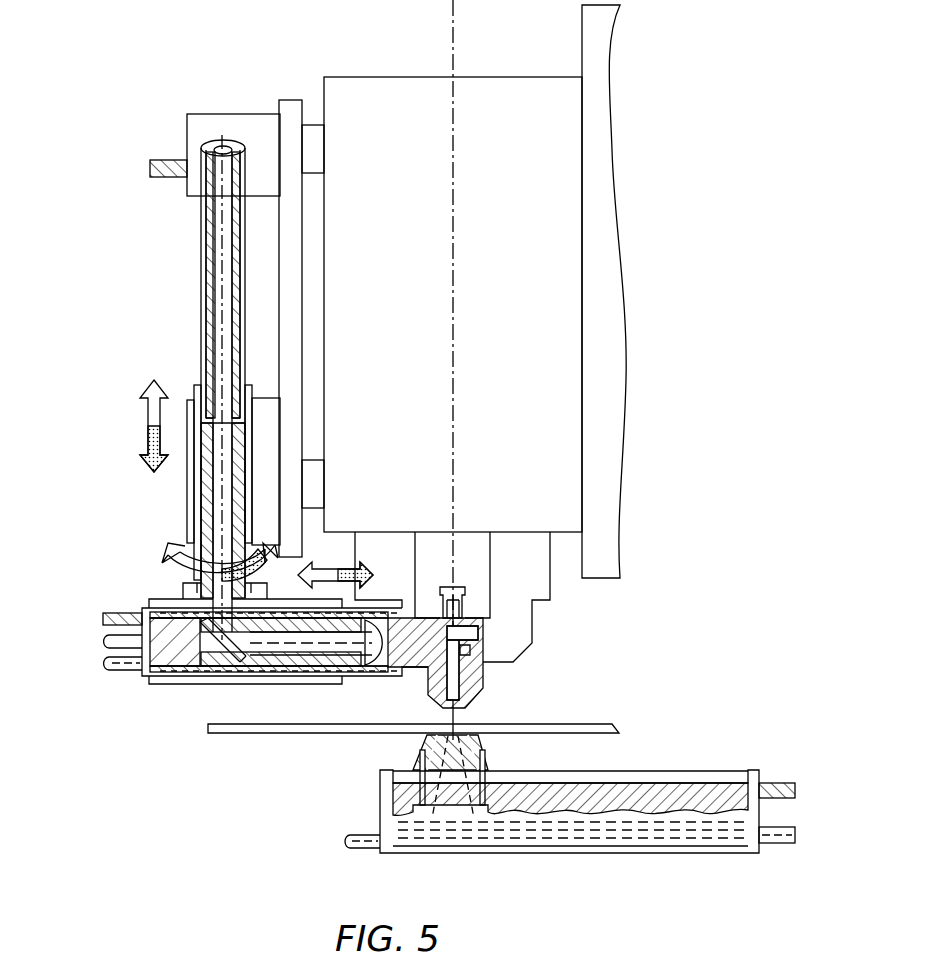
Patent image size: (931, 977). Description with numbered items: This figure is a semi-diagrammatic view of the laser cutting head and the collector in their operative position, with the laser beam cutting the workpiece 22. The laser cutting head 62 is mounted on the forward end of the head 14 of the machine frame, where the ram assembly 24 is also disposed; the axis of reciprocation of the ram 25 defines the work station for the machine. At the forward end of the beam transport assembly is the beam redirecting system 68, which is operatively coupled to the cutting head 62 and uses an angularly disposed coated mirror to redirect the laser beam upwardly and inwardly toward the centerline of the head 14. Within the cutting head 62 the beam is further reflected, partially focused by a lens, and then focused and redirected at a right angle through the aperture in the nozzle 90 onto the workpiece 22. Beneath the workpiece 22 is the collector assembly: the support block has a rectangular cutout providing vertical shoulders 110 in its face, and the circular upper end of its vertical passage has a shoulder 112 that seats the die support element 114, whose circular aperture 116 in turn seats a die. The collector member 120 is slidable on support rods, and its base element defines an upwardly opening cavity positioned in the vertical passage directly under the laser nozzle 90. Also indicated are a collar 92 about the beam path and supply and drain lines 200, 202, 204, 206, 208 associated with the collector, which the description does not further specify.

The head 14 is at (600, 54).
The ram assembly 24 is at (524, 77).
The ram 25 is at (480, 592).
The beam redirecting system 68 is at (212, 114).
The laser cutting head 62 is at (200, 222).
The vertical shoulders 110 is at (201, 277).
The shoulder 112 is at (195, 385).
The die support element 114 is at (186, 684).
The circular aperture 116 is at (240, 672).
The collector member 120 is at (462, 617).
The nozzle 90 is at (484, 690).
The workpiece 22 is at (582, 724).
The collar 92 is at (492, 756).
The supply line 200 is at (105, 612).
The supply lines 202 is at (103, 665).
The inlet 204 is at (325, 842).
The outlet 206 is at (830, 785).
The outlet 208 is at (825, 830).